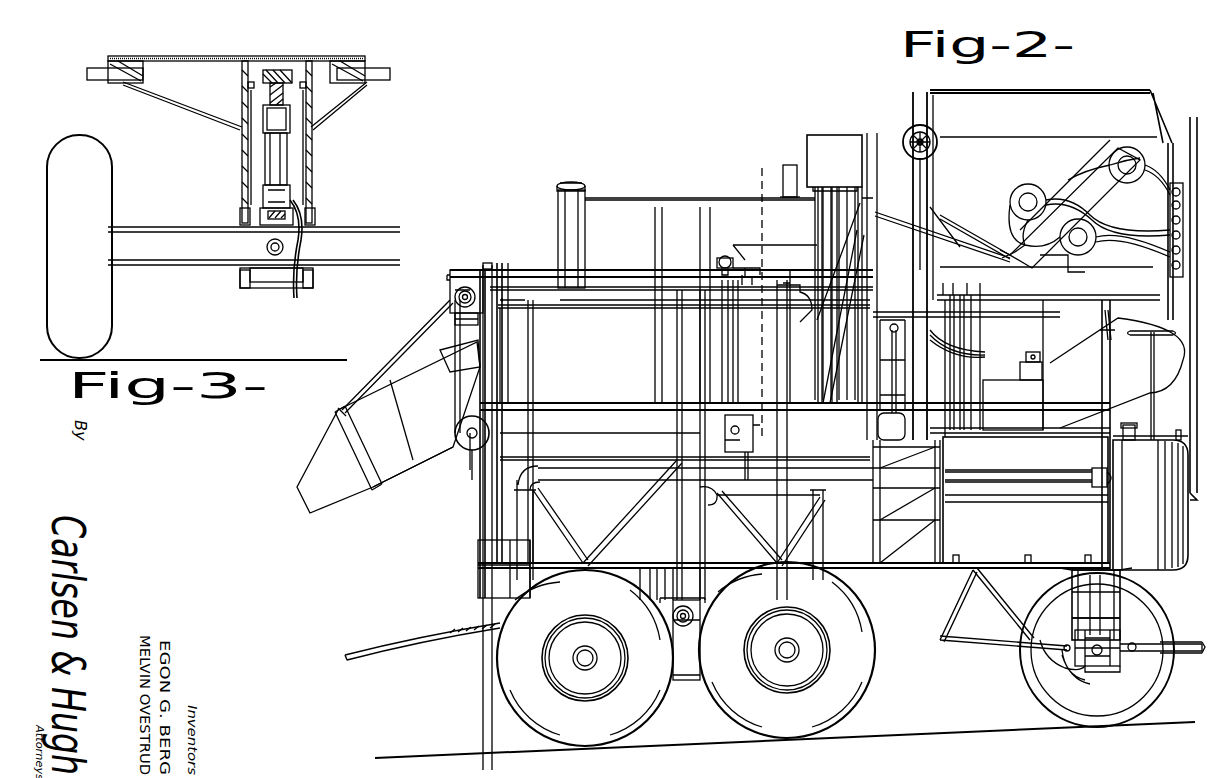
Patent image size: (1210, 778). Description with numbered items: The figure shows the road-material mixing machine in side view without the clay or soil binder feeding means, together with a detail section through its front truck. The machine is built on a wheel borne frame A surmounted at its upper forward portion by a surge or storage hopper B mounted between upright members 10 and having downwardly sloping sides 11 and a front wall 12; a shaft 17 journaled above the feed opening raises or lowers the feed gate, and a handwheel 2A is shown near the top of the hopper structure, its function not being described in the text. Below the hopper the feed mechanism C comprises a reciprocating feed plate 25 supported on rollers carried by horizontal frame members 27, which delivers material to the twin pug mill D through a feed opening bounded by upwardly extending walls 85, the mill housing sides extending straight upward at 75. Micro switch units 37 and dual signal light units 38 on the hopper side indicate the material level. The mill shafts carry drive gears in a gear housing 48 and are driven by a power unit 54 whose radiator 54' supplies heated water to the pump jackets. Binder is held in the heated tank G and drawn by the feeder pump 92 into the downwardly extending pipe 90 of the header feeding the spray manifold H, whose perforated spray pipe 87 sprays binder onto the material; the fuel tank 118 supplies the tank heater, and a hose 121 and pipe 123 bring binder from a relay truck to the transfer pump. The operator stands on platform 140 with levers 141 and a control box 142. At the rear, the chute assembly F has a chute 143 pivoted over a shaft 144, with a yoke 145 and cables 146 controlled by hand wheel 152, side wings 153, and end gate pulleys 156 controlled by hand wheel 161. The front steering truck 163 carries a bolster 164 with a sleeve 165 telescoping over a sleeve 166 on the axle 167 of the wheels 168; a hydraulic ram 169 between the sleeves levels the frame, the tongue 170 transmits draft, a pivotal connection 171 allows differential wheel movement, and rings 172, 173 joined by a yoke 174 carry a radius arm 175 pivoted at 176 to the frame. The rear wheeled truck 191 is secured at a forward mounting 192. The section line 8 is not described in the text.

In FIG. 2, the wheel borne frame A is at (471, 590).
In FIG. 2, the surge or storage hopper B is at (1092, 88).
In FIG. 2, the feed mechanism C is at (1123, 285).
In FIG. 2, the twin pug mill D is at (625, 297).
In FIG. 2, the chute F is at (396, 484).
In FIG. 2, the heated tank G is at (671, 467).
In FIG. 2, the spray manifold or head H is at (725, 250).
In FIG. 2, the section line 8- 8 is at (764, 171).
In FIG. 2, the upright members 10 is at (1164, 96).
In FIG. 2, the downwardly sloping sides 11 is at (960, 128).
In FIG. 2, the front wall 12 is at (1150, 140).
In FIG. 2, the shaft 17 is at (925, 97).
In FIG. 2, the steering wheel 2A is at (906, 134).
In FIG. 2, the feed plate or reciprocating feed member 25 is at (1068, 280).
In FIG. 2, the horizontal frame members 27 is at (1034, 354).
In FIG. 2, the micro switch units 37 is at (1080, 217).
In FIG. 2, the dual signal light units 38 is at (1168, 213).
In FIG. 2, the gear housing 48 is at (902, 416).
In FIG. 2, the power unit 54 is at (600, 229).
In FIG. 2, the radiator 54' is at (552, 207).
In FIG. 2, the straight upwardly extending side portions 75 is at (580, 300).
In FIG. 2, the upwardly extending walls 85 is at (812, 312).
In FIG. 2, the perforated spray pipe 87 is at (748, 270).
In FIG. 2, the downwardly extending portion 90 is at (707, 339).
In FIG. 2, the feeder pump 92 is at (928, 665).
In FIG. 2, the fuel tank 118 is at (1110, 505).
In FIG. 2, the hose 121 is at (400, 646).
In FIG. 2, the pipe 123 is at (612, 480).
In FIG. 2, the operator's platform 140 is at (955, 440).
In FIG. 2, the levers 141 is at (986, 353).
In FIG. 2, the box 142 is at (832, 150).
In FIG. 2, the chute 143 is at (320, 474).
In FIG. 2, the transversely journaled shaft 144 is at (471, 452).
In FIG. 2, the yoke 145 is at (357, 449).
In FIG. 2, the cables 146 is at (410, 341).
In FIG. 2, the hand wheel 152 is at (492, 265).
In FIG. 2, the side wings 153 is at (502, 383).
In FIG. 2, the pulleys 156 is at (455, 433).
In FIG. 2, the hand wheel 161 is at (478, 270).
In FIG. 3, the front steering truck 163 is at (323, 176).
In FIG. 2, the front steering truck 163 is at (1173, 616).
In FIG. 3, the bolster member 164 is at (215, 60).
In FIG. 2, the bolster member 164 is at (1090, 569).
In FIG. 3, the sleeve 165 is at (243, 145).
In FIG. 2, the sleeve 165 is at (1085, 600).
In FIG. 3, the sleeve 166 is at (243, 185).
In FIG. 2, the sleeve 166 is at (1085, 621).
In FIG. 3, the axle 167 is at (345, 231).
In FIG. 2, the axle 167 is at (1135, 640).
In FIG. 3, the wheels 168 is at (102, 312).
In FIG. 2, the wheels 168 is at (1050, 692).
In FIG. 3, the hydraulic ram or jack 169 is at (289, 130).
In FIG. 2, the tongue 170 is at (1196, 654).
In FIG. 3, the pivotal connection 171 is at (267, 247).
In FIG. 2, the pivotal connection 171 is at (1100, 668).
In FIG. 3, the ring 172 is at (242, 215).
In FIG. 2, the ring 172 is at (1118, 630).
In FIG. 3, the ring 173 is at (242, 277).
In FIG. 2, the ring 173 is at (1118, 668).
In FIG. 2, the yoke 174 is at (1070, 662).
In FIG. 2, the radius arm 175 is at (1002, 640).
In FIG. 2, the pivot 176 is at (1060, 650).
In FIG. 2, the rear wheeled truck 191 is at (688, 676).
In FIG. 2, the forward mounting 192 is at (695, 600).